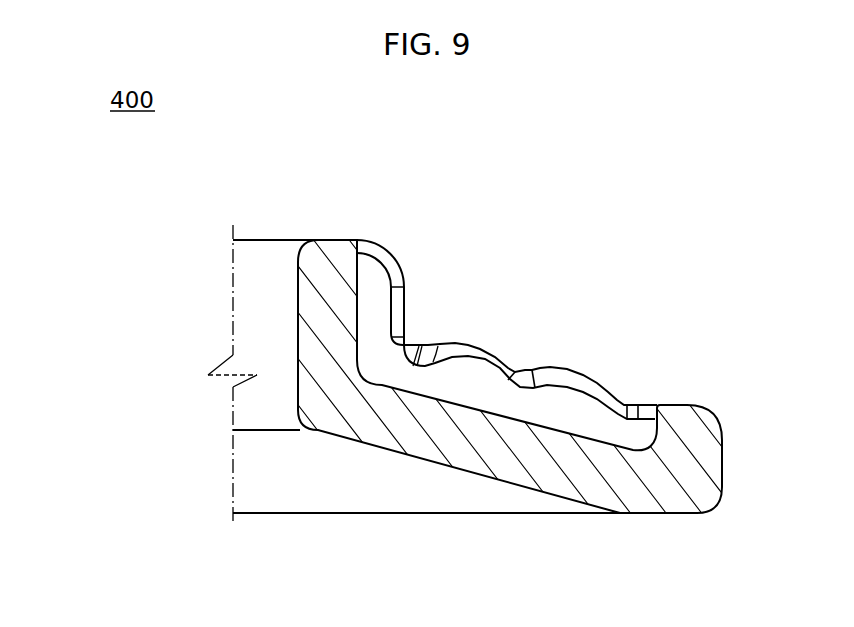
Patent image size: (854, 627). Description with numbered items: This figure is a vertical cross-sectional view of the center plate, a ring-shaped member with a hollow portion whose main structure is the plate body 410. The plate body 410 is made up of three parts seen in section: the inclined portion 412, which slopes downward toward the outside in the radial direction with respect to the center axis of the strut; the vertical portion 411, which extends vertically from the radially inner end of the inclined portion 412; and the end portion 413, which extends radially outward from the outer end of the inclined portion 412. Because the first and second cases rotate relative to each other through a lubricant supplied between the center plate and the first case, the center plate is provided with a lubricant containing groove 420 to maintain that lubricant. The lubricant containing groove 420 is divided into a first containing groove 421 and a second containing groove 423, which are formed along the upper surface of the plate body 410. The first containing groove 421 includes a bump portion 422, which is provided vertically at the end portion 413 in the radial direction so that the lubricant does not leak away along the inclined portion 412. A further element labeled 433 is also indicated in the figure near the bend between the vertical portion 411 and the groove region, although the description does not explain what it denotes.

The plate body 410 is at (145, 315).
The vertical portion 411 is at (315, 340).
The inclined portion 412 is at (512, 465).
The end portion 413 is at (688, 470).
The lubricant containing groove 420 is at (738, 253).
The first containing groove 421 is at (550, 427).
The bump portion 422 is at (638, 427).
The second containing groove 423 is at (527, 370).
The joint portion 433 is at (422, 345).